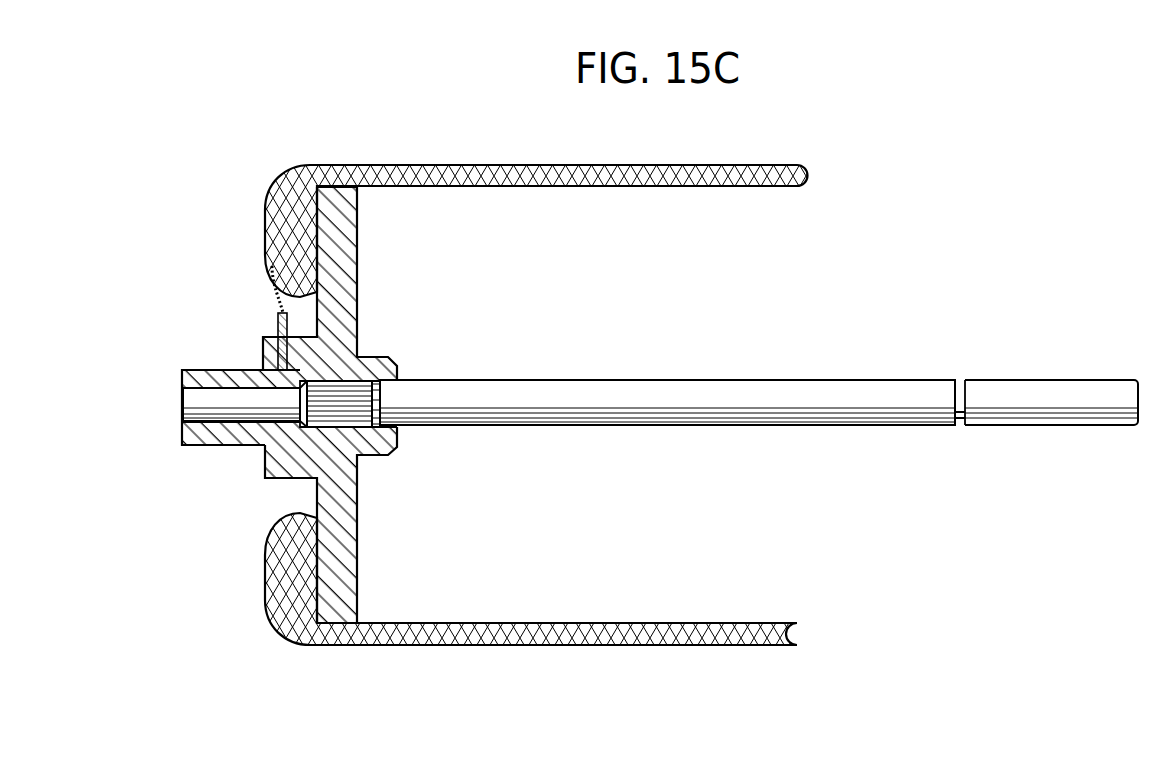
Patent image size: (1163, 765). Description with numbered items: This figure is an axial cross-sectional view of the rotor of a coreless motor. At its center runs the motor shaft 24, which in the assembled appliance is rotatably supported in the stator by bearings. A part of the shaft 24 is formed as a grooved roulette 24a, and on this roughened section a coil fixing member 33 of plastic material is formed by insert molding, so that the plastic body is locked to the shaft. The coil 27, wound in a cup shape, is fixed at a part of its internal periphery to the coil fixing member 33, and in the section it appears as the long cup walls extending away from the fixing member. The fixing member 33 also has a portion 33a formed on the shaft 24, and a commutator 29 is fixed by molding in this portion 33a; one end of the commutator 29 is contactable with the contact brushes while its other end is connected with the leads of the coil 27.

The motor shaft 24 is at (836, 395).
The grooved roulette 24a is at (350, 399).
The coil 27 is at (603, 186).
The commutator 29 is at (278, 328).
The coil fixing member 33 is at (340, 302).
The portion of fixing member 33a is at (200, 383).